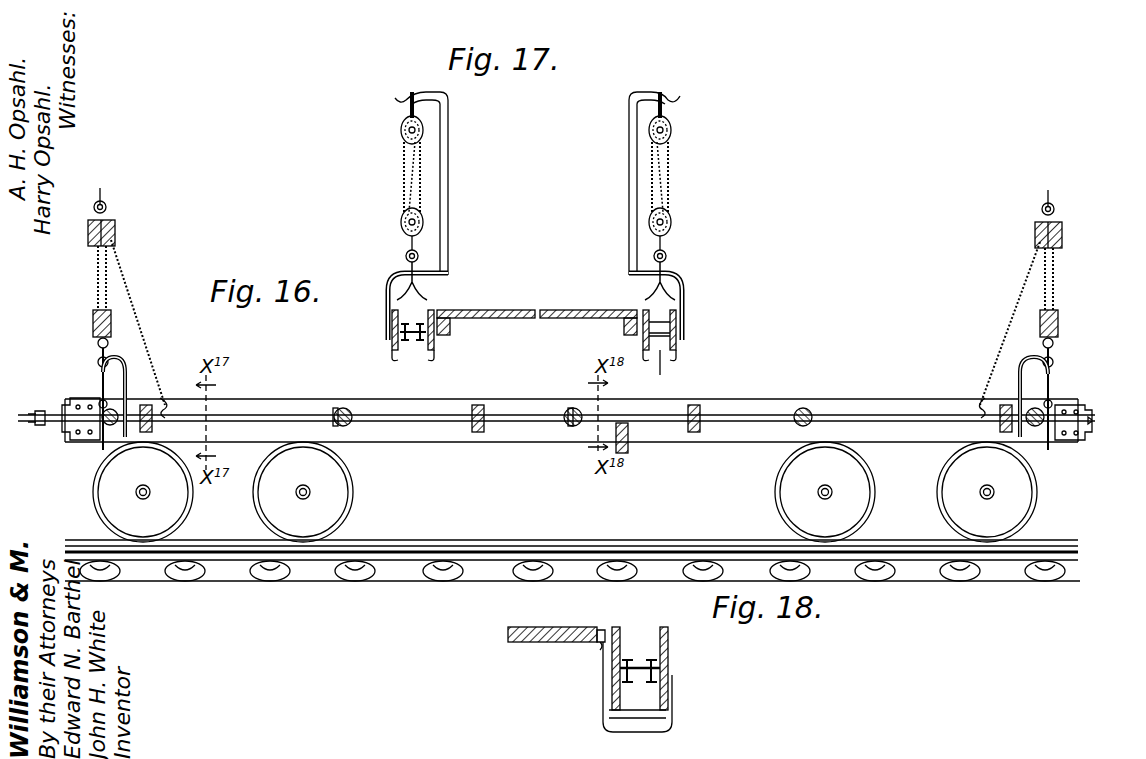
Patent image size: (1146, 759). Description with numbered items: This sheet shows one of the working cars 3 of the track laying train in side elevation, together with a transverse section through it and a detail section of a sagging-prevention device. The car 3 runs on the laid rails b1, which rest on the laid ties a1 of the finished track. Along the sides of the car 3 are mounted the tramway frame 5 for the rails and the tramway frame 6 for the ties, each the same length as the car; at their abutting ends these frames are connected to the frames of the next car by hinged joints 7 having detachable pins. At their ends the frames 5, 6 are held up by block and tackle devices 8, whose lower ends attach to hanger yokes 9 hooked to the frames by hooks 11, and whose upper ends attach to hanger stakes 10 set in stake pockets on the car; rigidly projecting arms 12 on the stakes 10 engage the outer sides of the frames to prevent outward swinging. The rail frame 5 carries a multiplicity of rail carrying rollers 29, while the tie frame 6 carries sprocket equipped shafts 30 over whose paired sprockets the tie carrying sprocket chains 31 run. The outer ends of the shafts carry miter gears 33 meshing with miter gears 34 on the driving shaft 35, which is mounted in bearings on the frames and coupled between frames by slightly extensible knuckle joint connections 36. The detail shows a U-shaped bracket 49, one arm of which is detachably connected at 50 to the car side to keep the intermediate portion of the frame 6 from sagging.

In FIG. 17, the working car 3 is at (518, 309).
In FIG. 18, the working car 3 is at (520, 642).
In FIG. 17, the tramway frame for the rails 5 is at (660, 318).
In FIG. 16, the tramway frame for the ties 6 is at (735, 428).
In FIG. 17, the tramway frame for the ties 6 is at (392, 345).
In FIG. 18, the tramway frame for the ties 6 is at (668, 642).
In FIG. 16, the hinged joint 7 is at (70, 430).
In FIG. 16, the block and tackle device 8 is at (110, 270).
In FIG. 17, the block and tackle device 8 is at (425, 188).
In FIG. 16, the hanger yoke 9 is at (98, 380).
In FIG. 17, the hanger yoke 9 is at (420, 292).
In FIG. 16, the hanger stake 10 is at (107, 193).
In FIG. 17, the hanger stake 10 is at (450, 125).
In FIG. 16, the hook 11 is at (100, 445).
In FIG. 17, the hook 11 is at (392, 358).
In FIG. 16, the rigidly projecting arm 12 is at (126, 368).
In FIG. 17, the rigidly projecting arm 12 is at (392, 276).
In FIG. 16, the rail carrying roller 29 is at (556, 392).
In FIG. 17, the rail carrying roller 29 is at (666, 369).
In FIG. 17, the sprocket equipped shaft 30 is at (412, 340).
In FIG. 18, the sprocket equipped shaft 30 is at (640, 666).
In FIG. 17, the tie carrying sprocket chain 31 is at (420, 324).
In FIG. 18, the tie carrying sprocket chain 31 is at (630, 684).
In FIG. 16, the miter gear 33 is at (347, 408).
In FIG. 16, the miter gear 34 is at (334, 410).
In FIG. 16, the driving shaft 35 is at (497, 410).
In FIG. 16, the knuckle joint connection 36 is at (35, 410).
In FIG. 16, the U-shaped bracket 49 is at (630, 448).
In FIG. 18, the U-shaped bracket 49 is at (603, 700).
In FIG. 18, the detachable connection 50 is at (597, 642).
In FIG. 16, the laid tie a1 is at (435, 578).
In FIG. 16, the laid rail b1 is at (445, 549).